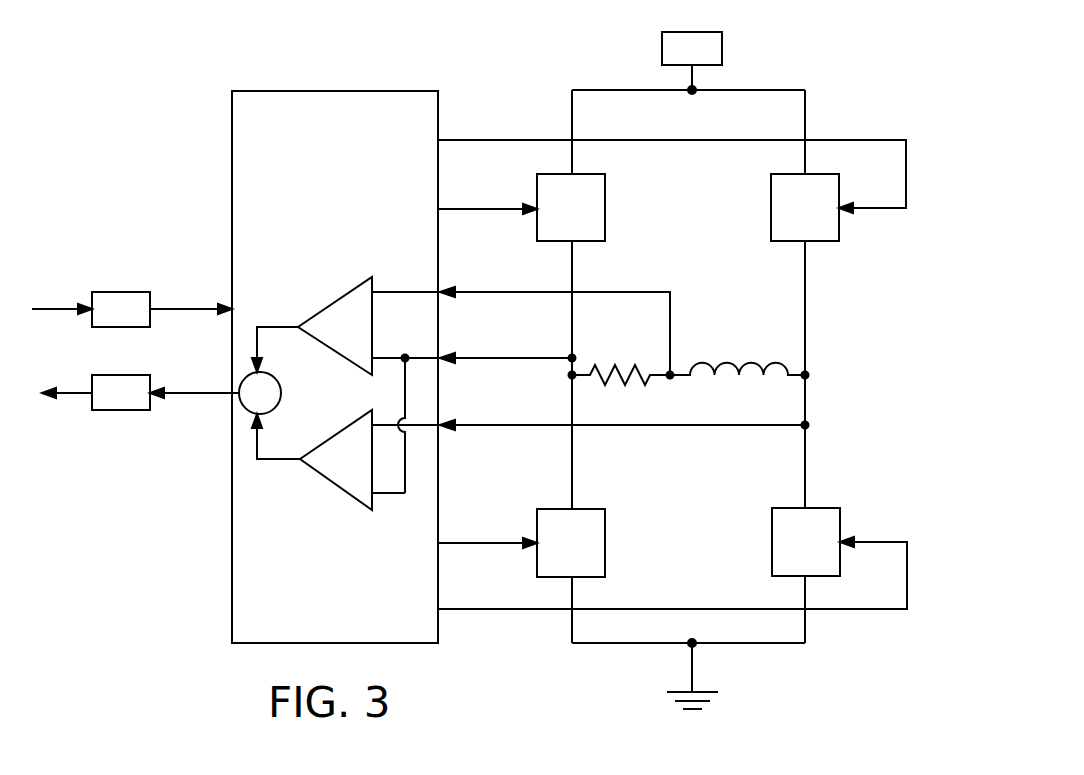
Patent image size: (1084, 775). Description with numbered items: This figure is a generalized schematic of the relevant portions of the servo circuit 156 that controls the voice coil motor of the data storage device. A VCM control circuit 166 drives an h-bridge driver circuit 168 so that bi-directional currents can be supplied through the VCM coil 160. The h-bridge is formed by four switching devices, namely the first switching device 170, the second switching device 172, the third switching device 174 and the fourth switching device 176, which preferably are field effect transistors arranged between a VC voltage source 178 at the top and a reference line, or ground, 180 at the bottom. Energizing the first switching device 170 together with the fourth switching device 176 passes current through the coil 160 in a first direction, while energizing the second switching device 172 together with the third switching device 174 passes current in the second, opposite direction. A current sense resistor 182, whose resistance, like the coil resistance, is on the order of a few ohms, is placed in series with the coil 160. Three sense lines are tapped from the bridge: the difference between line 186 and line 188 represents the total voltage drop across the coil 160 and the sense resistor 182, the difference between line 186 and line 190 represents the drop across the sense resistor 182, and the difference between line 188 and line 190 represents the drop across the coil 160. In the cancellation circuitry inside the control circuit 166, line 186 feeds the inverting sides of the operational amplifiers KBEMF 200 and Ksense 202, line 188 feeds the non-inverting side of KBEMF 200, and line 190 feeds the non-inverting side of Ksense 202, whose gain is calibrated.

The servo circuit 156 is at (809, 68).
The VCM coil 160 is at (720, 370).
The VCM control circuit 166 is at (338, 91).
The h-bridge driver circuit 168 is at (569, 66).
The switching device S1 170 is at (605, 209).
The switching device S2 172 is at (771, 207).
The switching device S3 174 is at (605, 543).
The switching device S4 176 is at (772, 542).
The VC voltage source 178 is at (722, 43).
The reference line (ground) 180 is at (690, 660).
The current sense resistor 182 is at (618, 382).
The line 186 (VCM+) 186 is at (483, 360).
The line 188 is at (483, 428).
The line 190 is at (525, 290).
The operational amplifier KBEMF 200 is at (322, 480).
The operational amplifier Ksense 202 is at (322, 310).